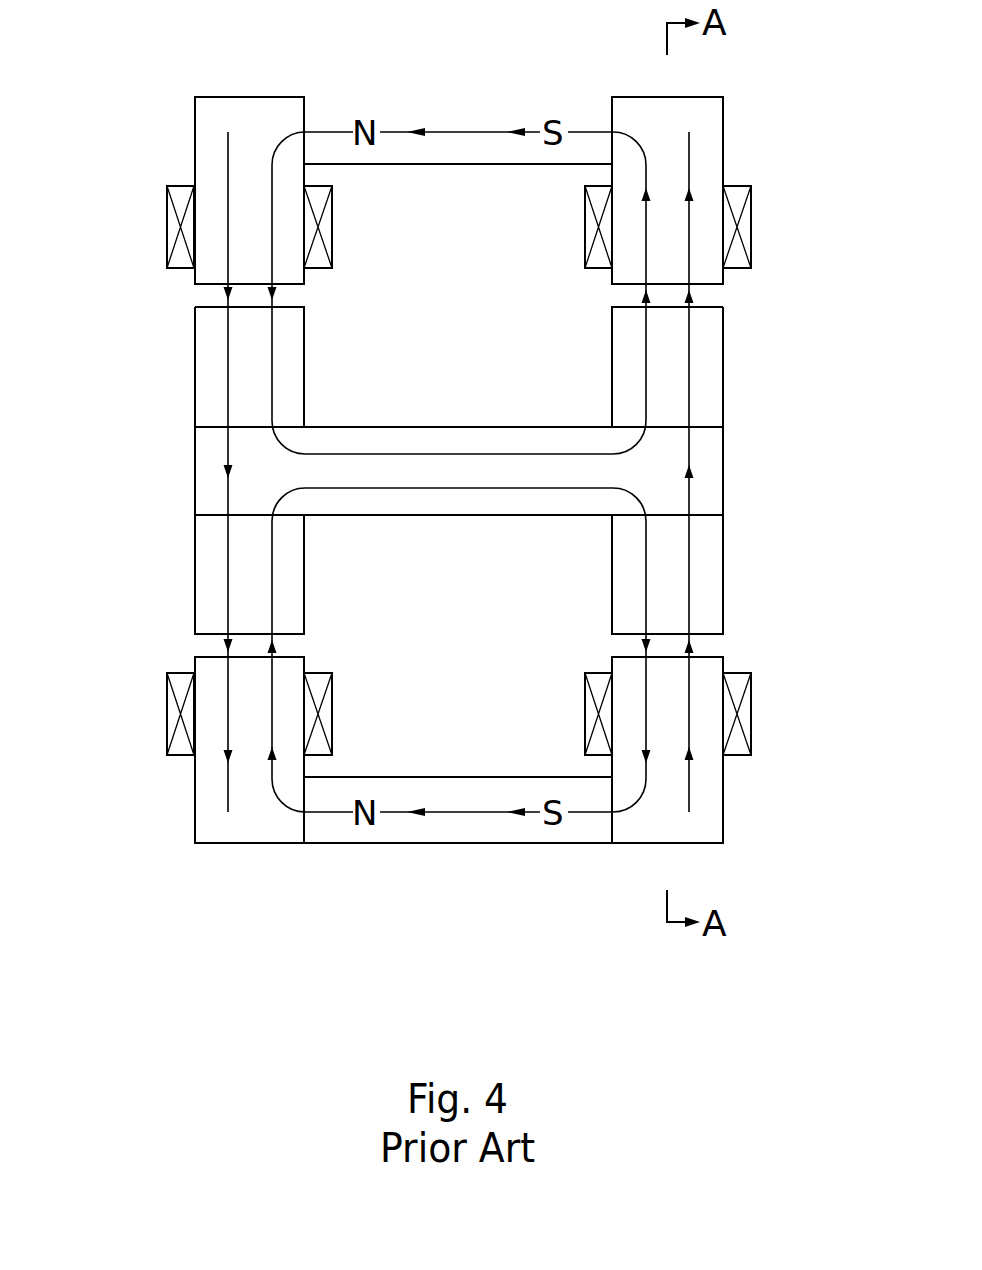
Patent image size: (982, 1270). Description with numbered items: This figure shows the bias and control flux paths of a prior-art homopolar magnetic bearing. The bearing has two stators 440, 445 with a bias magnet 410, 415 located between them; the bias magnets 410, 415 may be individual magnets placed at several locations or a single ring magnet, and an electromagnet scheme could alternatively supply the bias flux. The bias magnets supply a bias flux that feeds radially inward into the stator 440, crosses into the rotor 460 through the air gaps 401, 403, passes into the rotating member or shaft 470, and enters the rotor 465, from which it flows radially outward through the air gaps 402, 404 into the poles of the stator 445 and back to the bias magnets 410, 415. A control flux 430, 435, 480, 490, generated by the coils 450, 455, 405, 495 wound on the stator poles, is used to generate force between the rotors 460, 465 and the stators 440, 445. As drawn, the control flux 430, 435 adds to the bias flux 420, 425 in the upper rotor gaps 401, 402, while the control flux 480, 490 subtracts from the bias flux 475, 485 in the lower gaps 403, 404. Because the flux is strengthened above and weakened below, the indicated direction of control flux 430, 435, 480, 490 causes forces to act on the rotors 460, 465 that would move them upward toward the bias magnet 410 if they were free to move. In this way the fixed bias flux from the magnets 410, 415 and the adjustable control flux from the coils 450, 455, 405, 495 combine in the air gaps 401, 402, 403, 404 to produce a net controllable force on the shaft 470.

The air gap 401 is at (193, 302).
The air gap 402 is at (727, 302).
The air gap 403 is at (200, 651).
The air gap 404 is at (718, 651).
The coil 405 is at (327, 707).
The bias magnet 410 is at (462, 97).
The bias magnet 415 is at (460, 846).
The bias flux 420 is at (278, 298).
The bias flux 425 is at (640, 300).
The control flux 430 is at (215, 297).
The control flux 435 is at (695, 298).
The stator 440 is at (203, 107).
The stator 445 is at (713, 110).
The coil 450 is at (327, 225).
The coil 455 is at (748, 225).
The rotor 460 is at (193, 362).
The rotor 465 is at (727, 362).
The rotating member (shaft) 470 is at (458, 430).
The bias flux 475 is at (278, 650).
The control flux 480 is at (215, 647).
The bias flux 485 is at (640, 650).
The control flux 490 is at (695, 647).
The coil 495 is at (748, 722).